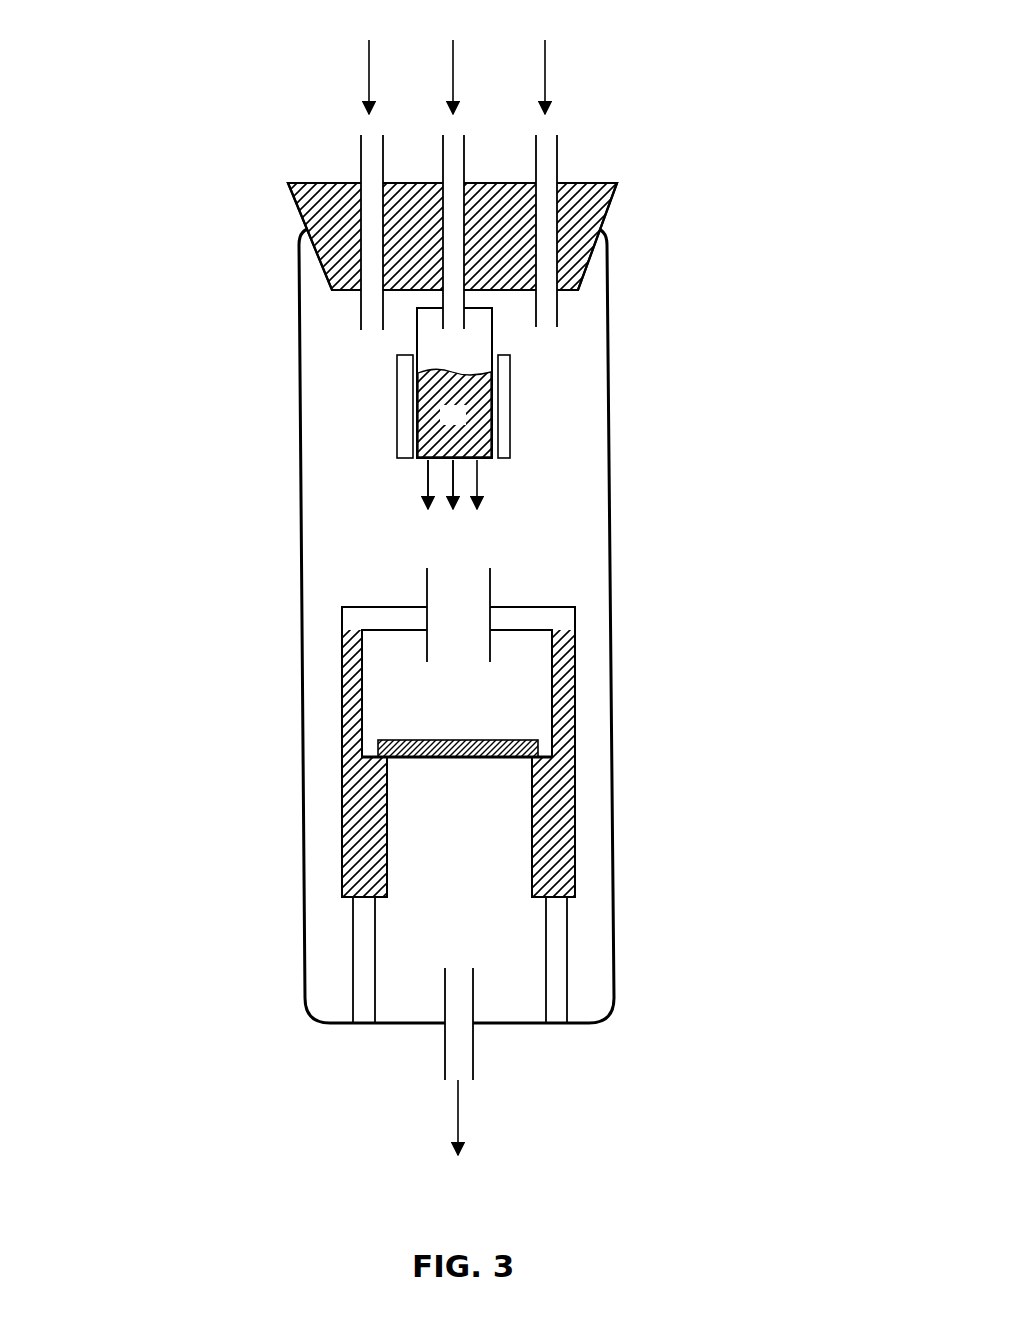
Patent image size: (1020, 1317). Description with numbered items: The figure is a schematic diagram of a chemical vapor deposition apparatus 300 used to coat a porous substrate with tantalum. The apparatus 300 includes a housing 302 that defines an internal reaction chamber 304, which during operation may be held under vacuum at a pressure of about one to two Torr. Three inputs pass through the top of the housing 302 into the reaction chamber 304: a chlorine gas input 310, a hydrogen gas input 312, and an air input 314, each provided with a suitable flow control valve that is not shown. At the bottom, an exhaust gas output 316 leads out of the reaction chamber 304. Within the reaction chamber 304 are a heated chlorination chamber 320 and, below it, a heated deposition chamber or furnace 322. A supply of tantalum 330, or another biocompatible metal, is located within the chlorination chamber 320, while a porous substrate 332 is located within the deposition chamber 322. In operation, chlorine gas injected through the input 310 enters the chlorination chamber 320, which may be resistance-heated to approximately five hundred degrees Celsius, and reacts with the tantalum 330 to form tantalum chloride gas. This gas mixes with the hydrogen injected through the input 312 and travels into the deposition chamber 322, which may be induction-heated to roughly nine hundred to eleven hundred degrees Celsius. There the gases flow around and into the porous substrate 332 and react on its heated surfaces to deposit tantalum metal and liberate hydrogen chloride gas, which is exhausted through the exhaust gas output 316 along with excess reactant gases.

The apparatus 300 is at (196, 130).
The housing 302 is at (608, 360).
The reaction chamber 304 is at (336, 511).
The chlorine gas input 310 is at (452, 228).
The hydrogen gas input 312 is at (361, 160).
The air input 314 is at (548, 168).
The exhaust gas output 316 is at (453, 1032).
The heated chlorination chamber 320 is at (417, 340).
The heated deposition chamber 322 is at (444, 732).
The tantalum 330 is at (445, 432).
The porous substrate 332 is at (480, 758).